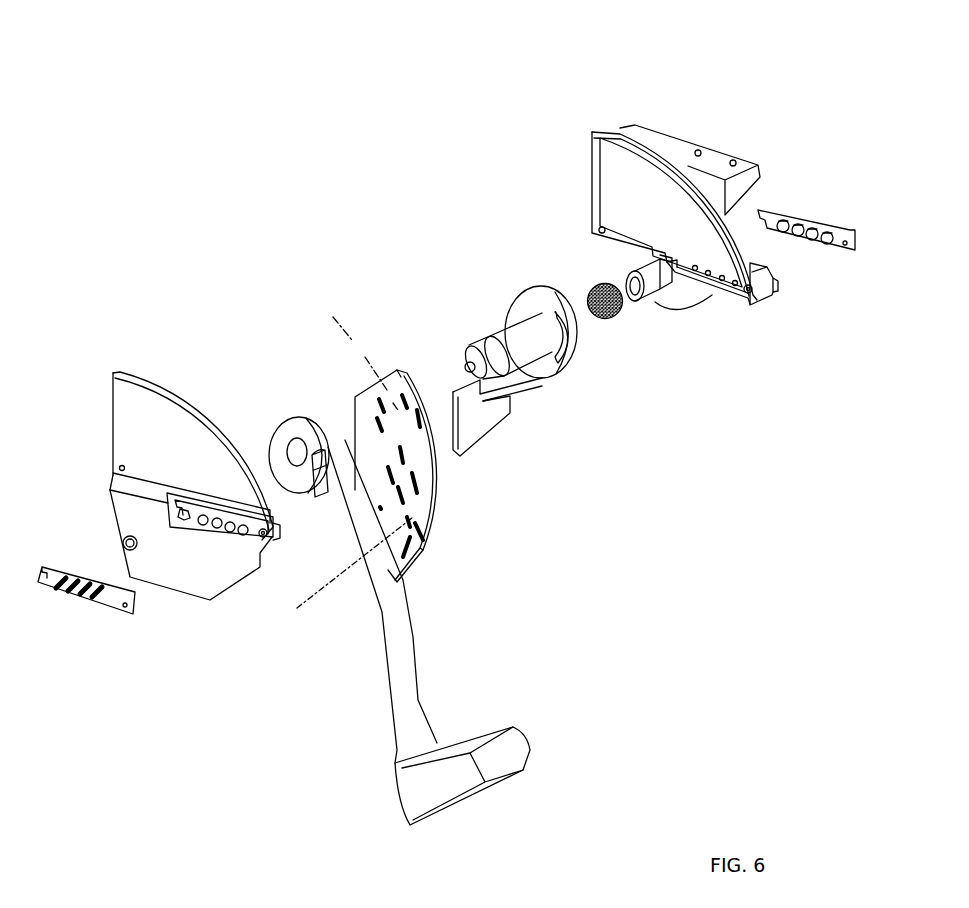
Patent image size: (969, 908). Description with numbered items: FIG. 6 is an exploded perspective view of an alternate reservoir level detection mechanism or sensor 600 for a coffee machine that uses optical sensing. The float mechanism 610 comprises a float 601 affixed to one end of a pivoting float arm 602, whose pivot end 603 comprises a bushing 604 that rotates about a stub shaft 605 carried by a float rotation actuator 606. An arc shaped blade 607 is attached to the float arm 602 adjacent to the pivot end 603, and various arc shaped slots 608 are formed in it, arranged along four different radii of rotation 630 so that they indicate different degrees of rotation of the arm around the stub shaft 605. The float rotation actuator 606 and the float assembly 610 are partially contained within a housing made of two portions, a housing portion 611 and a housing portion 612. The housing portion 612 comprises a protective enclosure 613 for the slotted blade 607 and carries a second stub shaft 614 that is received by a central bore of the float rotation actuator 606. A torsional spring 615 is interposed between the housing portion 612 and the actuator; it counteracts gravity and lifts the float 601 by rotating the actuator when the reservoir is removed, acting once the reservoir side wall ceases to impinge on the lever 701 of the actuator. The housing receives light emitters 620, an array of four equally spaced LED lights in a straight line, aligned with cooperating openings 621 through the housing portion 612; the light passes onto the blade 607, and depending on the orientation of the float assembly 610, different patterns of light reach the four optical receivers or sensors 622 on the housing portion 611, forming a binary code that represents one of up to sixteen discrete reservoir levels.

The reservoir level detection mechanism 600 is at (677, 43).
The float 601 is at (513, 753).
The float arm 602 is at (403, 673).
The pivot end 603 is at (298, 413).
The bushing 604 is at (300, 483).
The stub shaft 605 is at (484, 336).
The float rotation actuator 606 is at (545, 413).
The arc shaped blade 607 is at (397, 370).
The arc shaped slots 608 is at (438, 550).
The float mechanism 610 is at (358, 711).
The housing portion 611 is at (167, 408).
The housing portion 612 is at (678, 147).
The protective enclosure 613 is at (616, 190).
The second stub shaft 614 is at (645, 298).
The torsional spring 615 is at (597, 322).
The light emitters 620 is at (840, 230).
The openings 621 is at (723, 293).
The optical receivers 622 is at (117, 606).
The radii of rotation 630 is at (333, 593).
The lever 701 is at (475, 430).